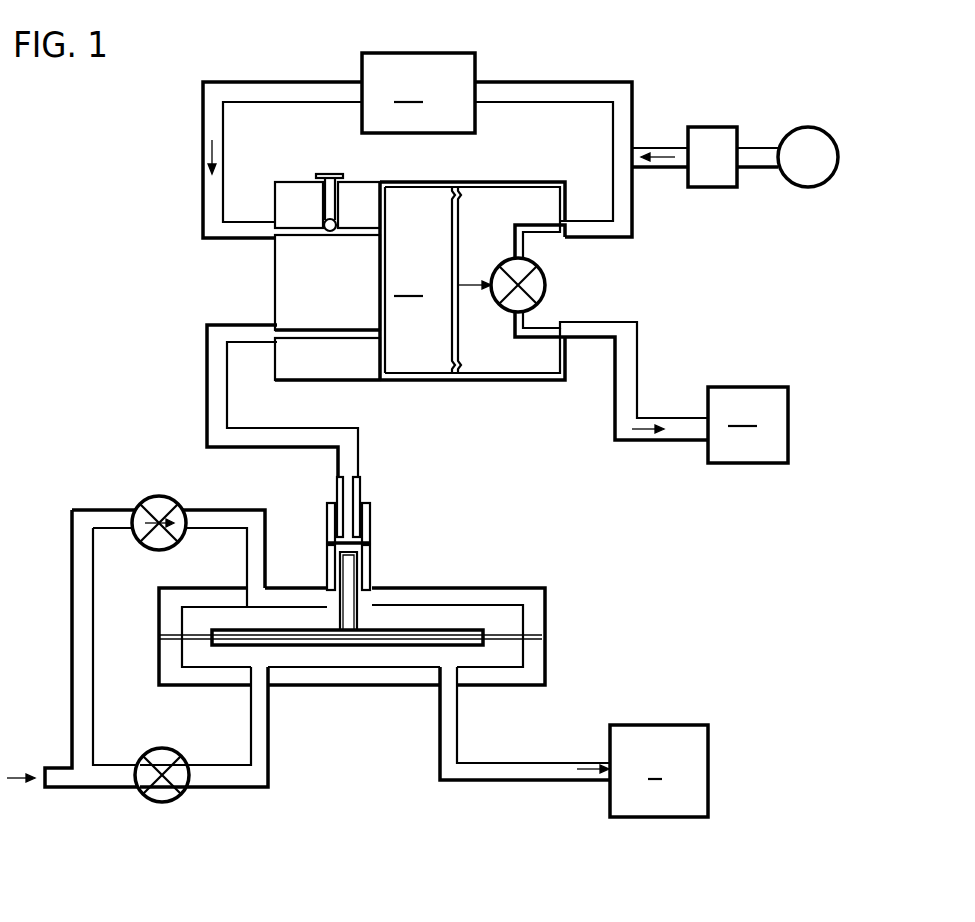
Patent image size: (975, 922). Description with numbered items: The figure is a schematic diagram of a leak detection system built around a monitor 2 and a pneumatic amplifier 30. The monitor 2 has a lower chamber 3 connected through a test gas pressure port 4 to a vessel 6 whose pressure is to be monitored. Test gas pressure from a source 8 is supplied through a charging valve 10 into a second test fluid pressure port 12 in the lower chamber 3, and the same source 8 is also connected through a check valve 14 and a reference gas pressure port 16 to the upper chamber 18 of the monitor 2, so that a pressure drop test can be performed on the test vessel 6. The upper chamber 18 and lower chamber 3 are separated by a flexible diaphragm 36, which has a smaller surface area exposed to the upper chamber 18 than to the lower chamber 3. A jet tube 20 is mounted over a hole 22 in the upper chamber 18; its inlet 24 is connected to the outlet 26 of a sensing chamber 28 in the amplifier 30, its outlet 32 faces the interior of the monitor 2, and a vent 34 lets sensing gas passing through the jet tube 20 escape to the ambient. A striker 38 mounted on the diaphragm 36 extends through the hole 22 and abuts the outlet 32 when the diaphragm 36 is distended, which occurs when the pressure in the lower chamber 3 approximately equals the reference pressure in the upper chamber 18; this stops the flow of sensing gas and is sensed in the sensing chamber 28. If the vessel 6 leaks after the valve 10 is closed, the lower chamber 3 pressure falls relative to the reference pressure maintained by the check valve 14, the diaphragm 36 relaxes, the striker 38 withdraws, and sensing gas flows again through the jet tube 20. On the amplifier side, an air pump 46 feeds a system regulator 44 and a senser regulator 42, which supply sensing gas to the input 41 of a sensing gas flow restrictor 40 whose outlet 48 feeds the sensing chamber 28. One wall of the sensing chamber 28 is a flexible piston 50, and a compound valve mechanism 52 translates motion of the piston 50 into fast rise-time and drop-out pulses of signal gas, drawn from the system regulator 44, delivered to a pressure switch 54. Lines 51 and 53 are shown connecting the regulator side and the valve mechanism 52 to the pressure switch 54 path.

The monitor 2 is at (619, 581).
The lower chamber 3 is at (512, 655).
The test gas pressure port 4 is at (440, 698).
The vessel 6 is at (710, 730).
The test gas pressure source 8 is at (17, 780).
The charging valve 10 is at (183, 802).
The second test fluid pressure port 12 is at (272, 692).
The check valve 14 is at (137, 508).
The reference gas pressure port 16 is at (248, 587).
The upper chamber 18 is at (195, 618).
The jet tube 20 is at (338, 490).
The hole 22 is at (360, 597).
The inlet 24 is at (360, 470).
The outlet 26 is at (277, 322).
The sensing chamber 28 is at (417, 281).
The pneumatic amplifier 30 is at (186, 273).
The outlet 32 is at (353, 537).
The vent 34 is at (372, 545).
The flexible diaphragm 36 is at (502, 632).
The striker 38 is at (350, 570).
The sensing gas flow restrictor 40 is at (318, 165).
The input 41 is at (268, 218).
The senser regulator 42 is at (468, 32).
The system regulator 44 is at (727, 177).
The air pump 46 is at (813, 143).
The outlet 48 is at (378, 232).
The flexible piston 50 is at (458, 223).
The supply pipe to amplifier 51 is at (572, 215).
The compound valve mechanism 52 is at (547, 299).
The outlet pipe to pressure switch 53 is at (568, 340).
The pressure switch 54 is at (785, 386).